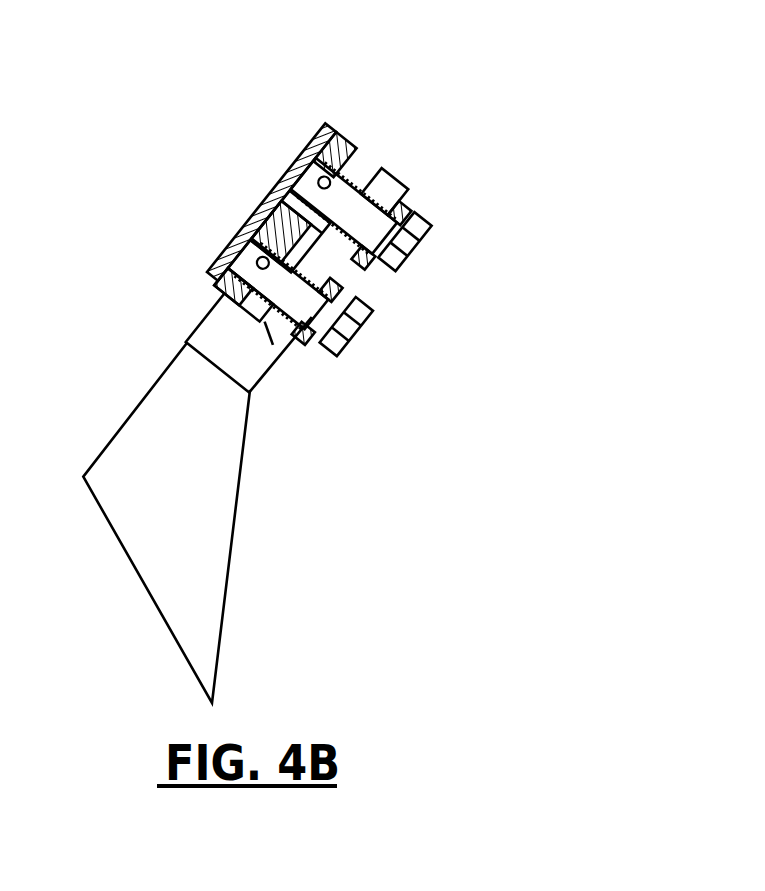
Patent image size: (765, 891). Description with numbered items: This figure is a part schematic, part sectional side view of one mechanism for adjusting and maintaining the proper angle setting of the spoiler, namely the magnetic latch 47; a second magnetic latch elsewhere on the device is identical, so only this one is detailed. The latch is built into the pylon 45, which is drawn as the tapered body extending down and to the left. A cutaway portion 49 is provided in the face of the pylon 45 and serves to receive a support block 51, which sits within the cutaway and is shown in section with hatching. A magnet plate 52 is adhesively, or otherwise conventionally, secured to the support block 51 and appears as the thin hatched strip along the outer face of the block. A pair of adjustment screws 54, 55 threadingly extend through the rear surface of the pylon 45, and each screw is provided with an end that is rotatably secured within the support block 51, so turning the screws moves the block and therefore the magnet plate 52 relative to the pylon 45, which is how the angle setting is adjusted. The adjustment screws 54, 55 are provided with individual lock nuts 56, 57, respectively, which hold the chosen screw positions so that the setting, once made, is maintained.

The pylon 45 is at (172, 424).
The magnetic latch 47 is at (255, 213).
The cutaway portion 49 is at (285, 370).
The support block 51 is at (360, 150).
The magnet plate 52 is at (323, 128).
The adjustment screw 54 is at (428, 237).
The adjustment screw 55 is at (360, 323).
The lock nut 56 is at (412, 195).
The lock nut 57 is at (305, 333).